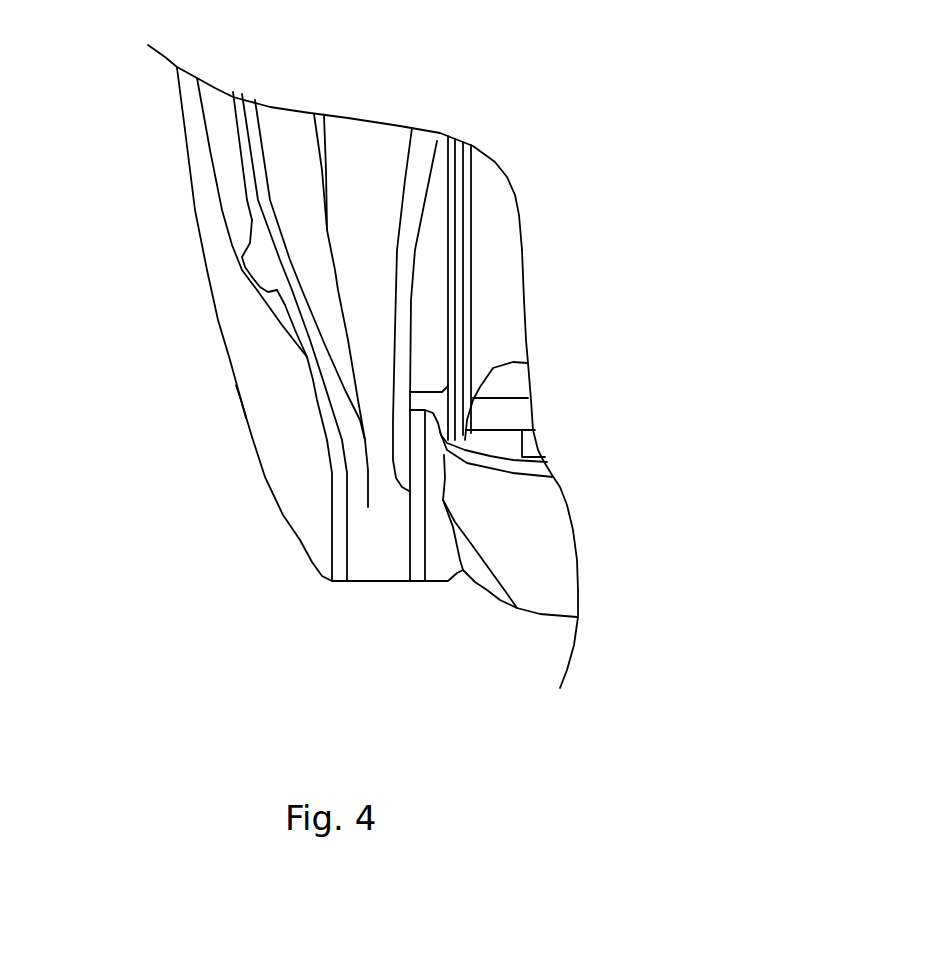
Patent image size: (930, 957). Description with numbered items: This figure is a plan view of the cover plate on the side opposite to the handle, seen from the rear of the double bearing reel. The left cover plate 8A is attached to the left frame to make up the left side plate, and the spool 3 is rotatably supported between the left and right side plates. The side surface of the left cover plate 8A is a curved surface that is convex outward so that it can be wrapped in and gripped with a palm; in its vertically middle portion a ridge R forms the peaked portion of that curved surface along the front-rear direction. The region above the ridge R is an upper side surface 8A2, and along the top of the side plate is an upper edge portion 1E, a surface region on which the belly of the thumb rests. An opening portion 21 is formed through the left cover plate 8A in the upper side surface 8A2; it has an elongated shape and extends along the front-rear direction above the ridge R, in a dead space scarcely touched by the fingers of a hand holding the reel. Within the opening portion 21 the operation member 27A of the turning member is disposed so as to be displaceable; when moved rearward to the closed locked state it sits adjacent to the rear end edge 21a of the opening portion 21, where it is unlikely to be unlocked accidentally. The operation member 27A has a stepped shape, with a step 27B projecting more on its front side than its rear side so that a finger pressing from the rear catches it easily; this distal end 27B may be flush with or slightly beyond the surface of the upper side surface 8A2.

The opening portion 21 is at (213, 310).
The upper edge portion 1E is at (335, 133).
The rear end edge 21a is at (361, 207).
The operation member 27A is at (153, 236).
The step 27B is at (177, 292).
The left cover plate 8A is at (157, 253).
The ridge R is at (199, 440).
The upper side surface 8A2 is at (310, 509).
The spool 3 is at (489, 408).